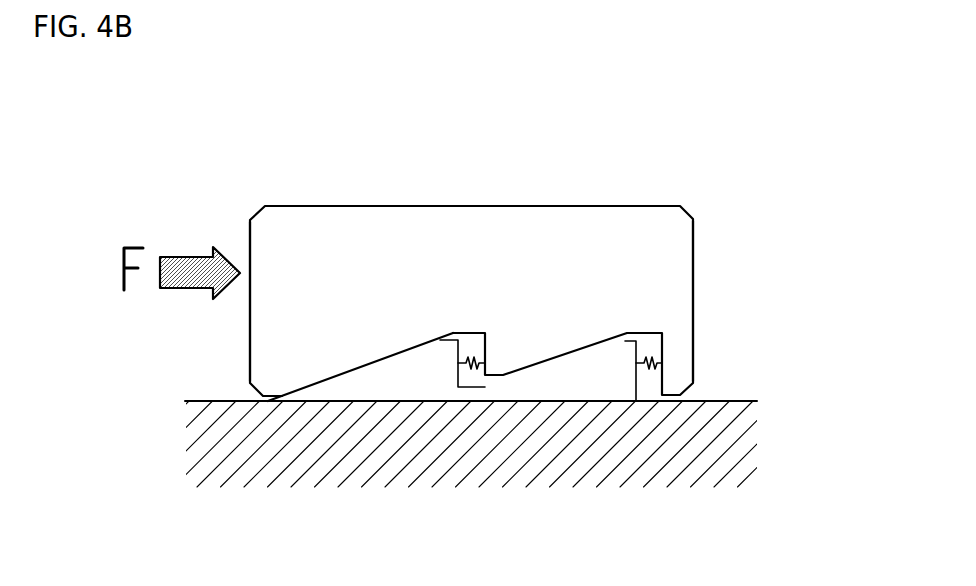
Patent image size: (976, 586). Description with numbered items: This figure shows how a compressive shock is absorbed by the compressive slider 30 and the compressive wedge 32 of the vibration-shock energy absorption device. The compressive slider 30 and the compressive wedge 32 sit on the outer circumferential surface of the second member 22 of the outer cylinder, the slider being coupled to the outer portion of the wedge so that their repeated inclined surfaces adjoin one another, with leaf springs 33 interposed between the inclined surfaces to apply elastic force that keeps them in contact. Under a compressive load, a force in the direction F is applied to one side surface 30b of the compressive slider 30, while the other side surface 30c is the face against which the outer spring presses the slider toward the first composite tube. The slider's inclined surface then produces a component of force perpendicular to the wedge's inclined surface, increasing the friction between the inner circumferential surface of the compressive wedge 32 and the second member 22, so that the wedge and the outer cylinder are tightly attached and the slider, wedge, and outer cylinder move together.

The compressive slider 30 is at (580, 235).
The one side surface of the compressive slider 30b is at (250, 323).
The other side surface of the compressive slider 30c is at (693, 298).
The compressive wedge 32 is at (402, 380).
The leaf spring 33 is at (472, 365).
The second member 22 is at (307, 463).